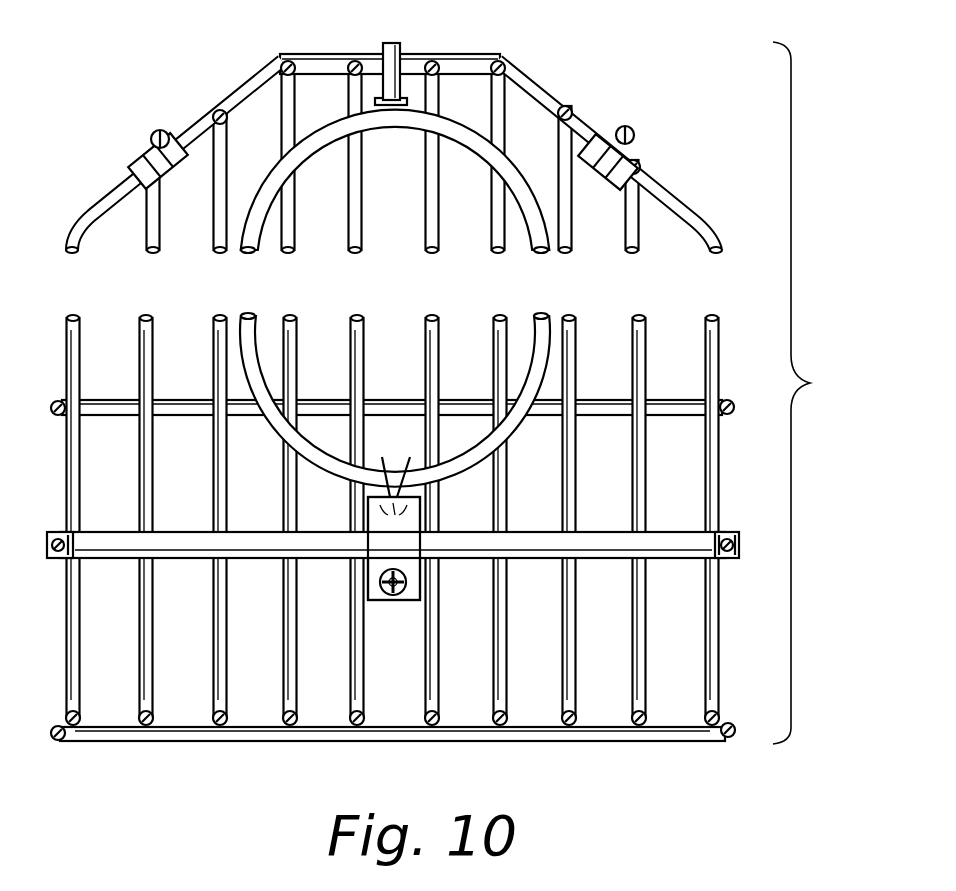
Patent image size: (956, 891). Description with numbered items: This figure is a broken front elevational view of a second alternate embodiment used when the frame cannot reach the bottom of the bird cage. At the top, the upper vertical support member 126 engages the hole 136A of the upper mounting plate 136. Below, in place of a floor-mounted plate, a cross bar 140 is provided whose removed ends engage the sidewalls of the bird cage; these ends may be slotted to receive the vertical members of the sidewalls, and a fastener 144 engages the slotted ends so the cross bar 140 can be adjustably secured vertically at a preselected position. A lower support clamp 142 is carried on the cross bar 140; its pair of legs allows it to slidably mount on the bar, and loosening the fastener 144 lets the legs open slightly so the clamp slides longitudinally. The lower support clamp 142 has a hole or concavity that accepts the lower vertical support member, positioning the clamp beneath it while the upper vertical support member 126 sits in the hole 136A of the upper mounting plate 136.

The upper vertical support member 126 is at (401, 50).
The hole 136A is at (402, 50).
The upper mounting plate 136 is at (563, 100).
The cross bar 140 is at (680, 532).
The lower support clamp 142 is at (394, 548).
The fastener 144 is at (739, 540).